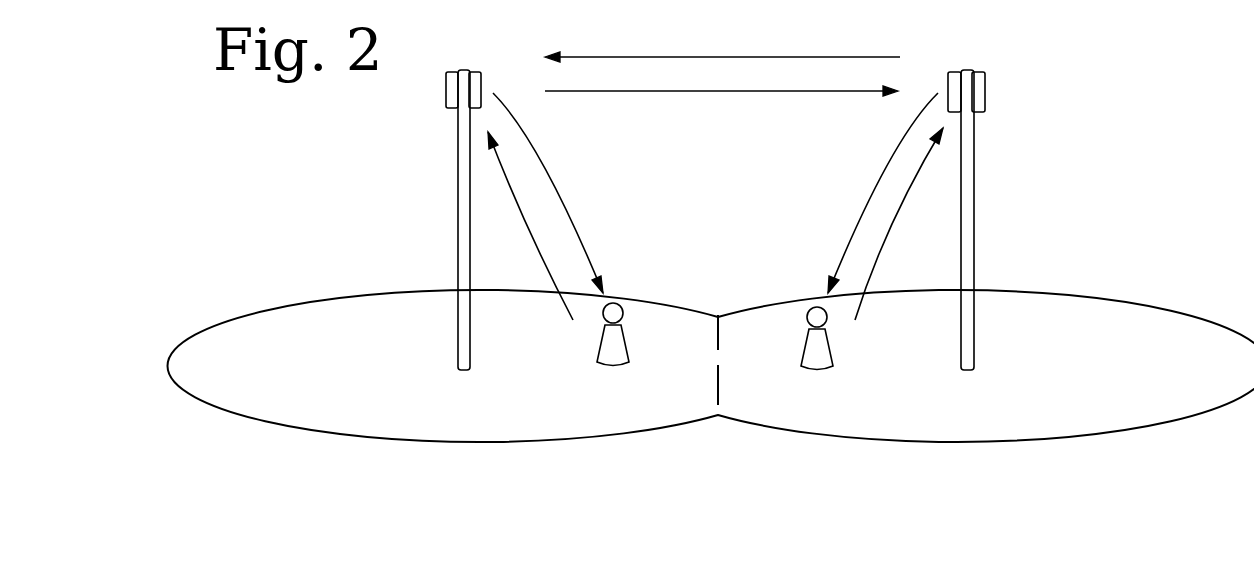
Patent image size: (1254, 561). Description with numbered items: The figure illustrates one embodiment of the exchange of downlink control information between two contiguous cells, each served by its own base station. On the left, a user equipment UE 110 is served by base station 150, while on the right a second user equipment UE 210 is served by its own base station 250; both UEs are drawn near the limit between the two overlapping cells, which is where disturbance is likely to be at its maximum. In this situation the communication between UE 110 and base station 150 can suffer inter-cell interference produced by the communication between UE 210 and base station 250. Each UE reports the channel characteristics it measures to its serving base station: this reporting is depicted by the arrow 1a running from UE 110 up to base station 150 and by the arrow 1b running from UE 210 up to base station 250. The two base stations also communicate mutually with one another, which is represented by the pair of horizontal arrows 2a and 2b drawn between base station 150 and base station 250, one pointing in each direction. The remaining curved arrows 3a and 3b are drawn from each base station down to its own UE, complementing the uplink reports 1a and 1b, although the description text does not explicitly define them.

The base station 150 is at (446, 92).
The base station 250 is at (985, 90).
The user equipment 110 is at (619, 303).
The user equipment 210 is at (809, 308).
The arrow 1a is at (530, 226).
The arrow 1b is at (900, 224).
The arrow 2a is at (721, 93).
The arrow 2b is at (722, 58).
The downlink signal from BS1 to U1 3a is at (548, 193).
The downlink signal from BS2 to U2 3b is at (883, 193).